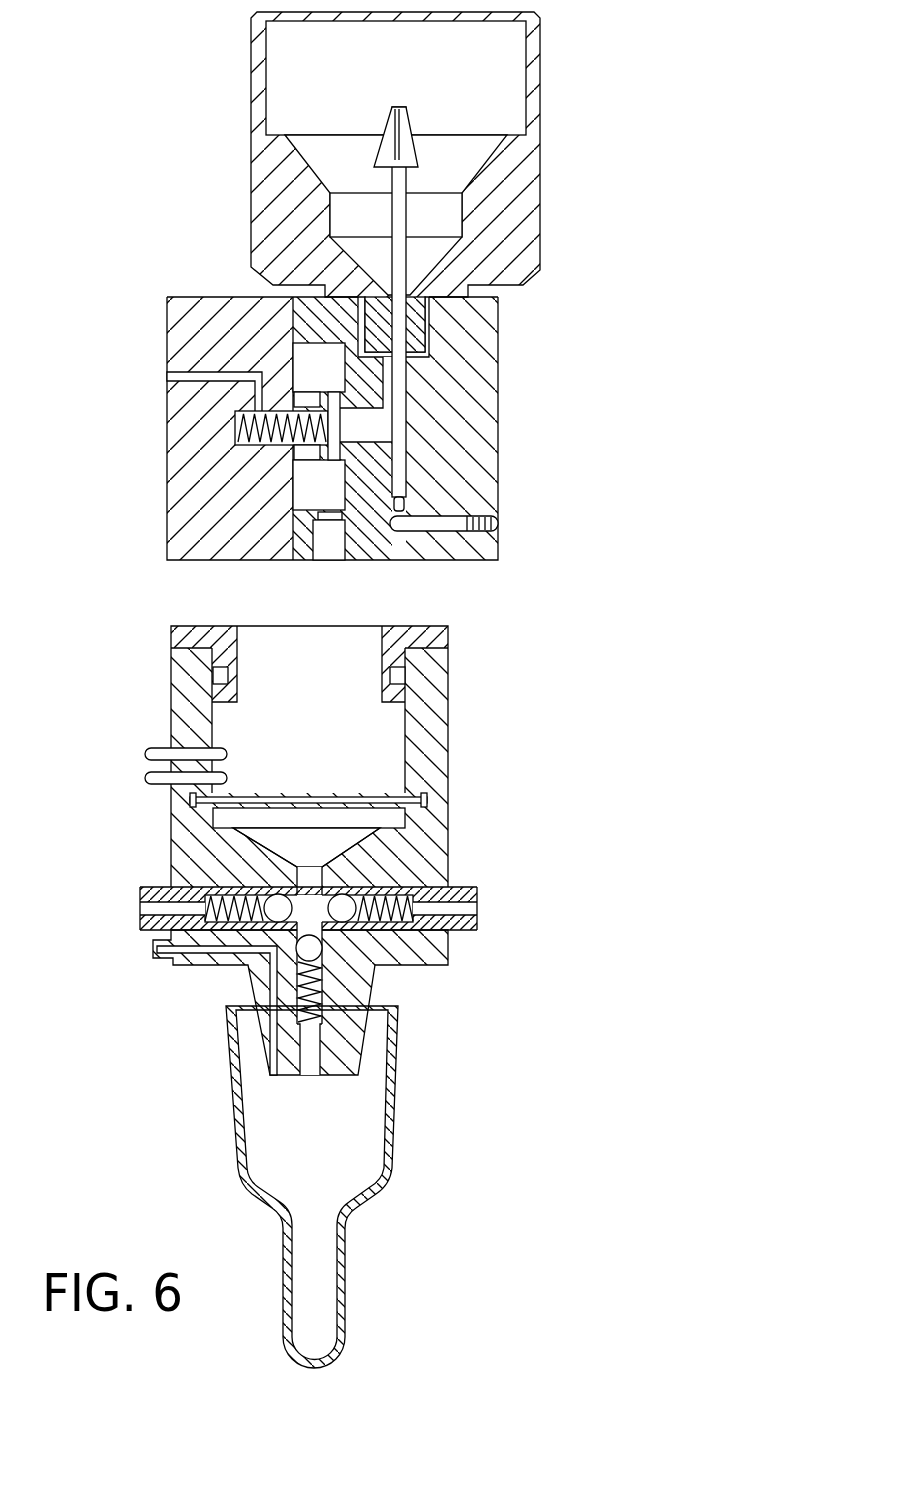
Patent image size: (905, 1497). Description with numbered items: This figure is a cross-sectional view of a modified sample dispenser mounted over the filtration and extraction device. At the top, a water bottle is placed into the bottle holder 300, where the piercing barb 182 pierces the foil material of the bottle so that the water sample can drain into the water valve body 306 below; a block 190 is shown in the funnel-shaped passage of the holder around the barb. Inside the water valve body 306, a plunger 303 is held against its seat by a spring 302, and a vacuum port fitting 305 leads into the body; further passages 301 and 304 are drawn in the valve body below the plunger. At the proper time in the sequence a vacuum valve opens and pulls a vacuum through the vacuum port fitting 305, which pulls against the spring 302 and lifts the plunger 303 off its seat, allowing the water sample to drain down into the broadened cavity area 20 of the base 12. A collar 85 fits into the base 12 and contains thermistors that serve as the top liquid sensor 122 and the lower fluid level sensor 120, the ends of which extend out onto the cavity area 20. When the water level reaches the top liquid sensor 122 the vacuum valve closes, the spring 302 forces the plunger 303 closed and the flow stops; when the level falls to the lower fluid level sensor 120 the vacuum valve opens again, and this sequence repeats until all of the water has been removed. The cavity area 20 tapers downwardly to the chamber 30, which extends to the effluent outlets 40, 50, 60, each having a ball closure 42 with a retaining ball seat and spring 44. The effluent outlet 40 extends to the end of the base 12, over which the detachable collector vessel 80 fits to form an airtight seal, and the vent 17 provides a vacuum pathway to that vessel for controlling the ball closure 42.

The bottle holder 300 is at (541, 52).
The piercing barb 182 is at (385, 118).
The filter block 190 is at (405, 218).
The vacuum port fitting 305 is at (167, 376).
The spring 302 is at (240, 428).
The water valve body 306 is at (498, 363).
The plunger 303 is at (367, 443).
The screw plug 301 is at (500, 525).
The outlet bore 304 is at (328, 552).
The collar 85 is at (449, 702).
The top liquid sensor 122 is at (145, 752).
The lower fluid level sensor 120 is at (145, 780).
The base 12 is at (171, 840).
The broadened cavity area 20 is at (312, 855).
The chamber 30 is at (316, 870).
The effluent outlet 60 is at (143, 903).
The effluent outlet 50 is at (480, 905).
The ball closure 42 is at (322, 948).
The retaining ball seat and spring 44 is at (325, 1003).
The detachable collector vessel 80 is at (395, 1093).
The vent 17 is at (275, 1080).
The effluent outlet 40 is at (310, 1068).